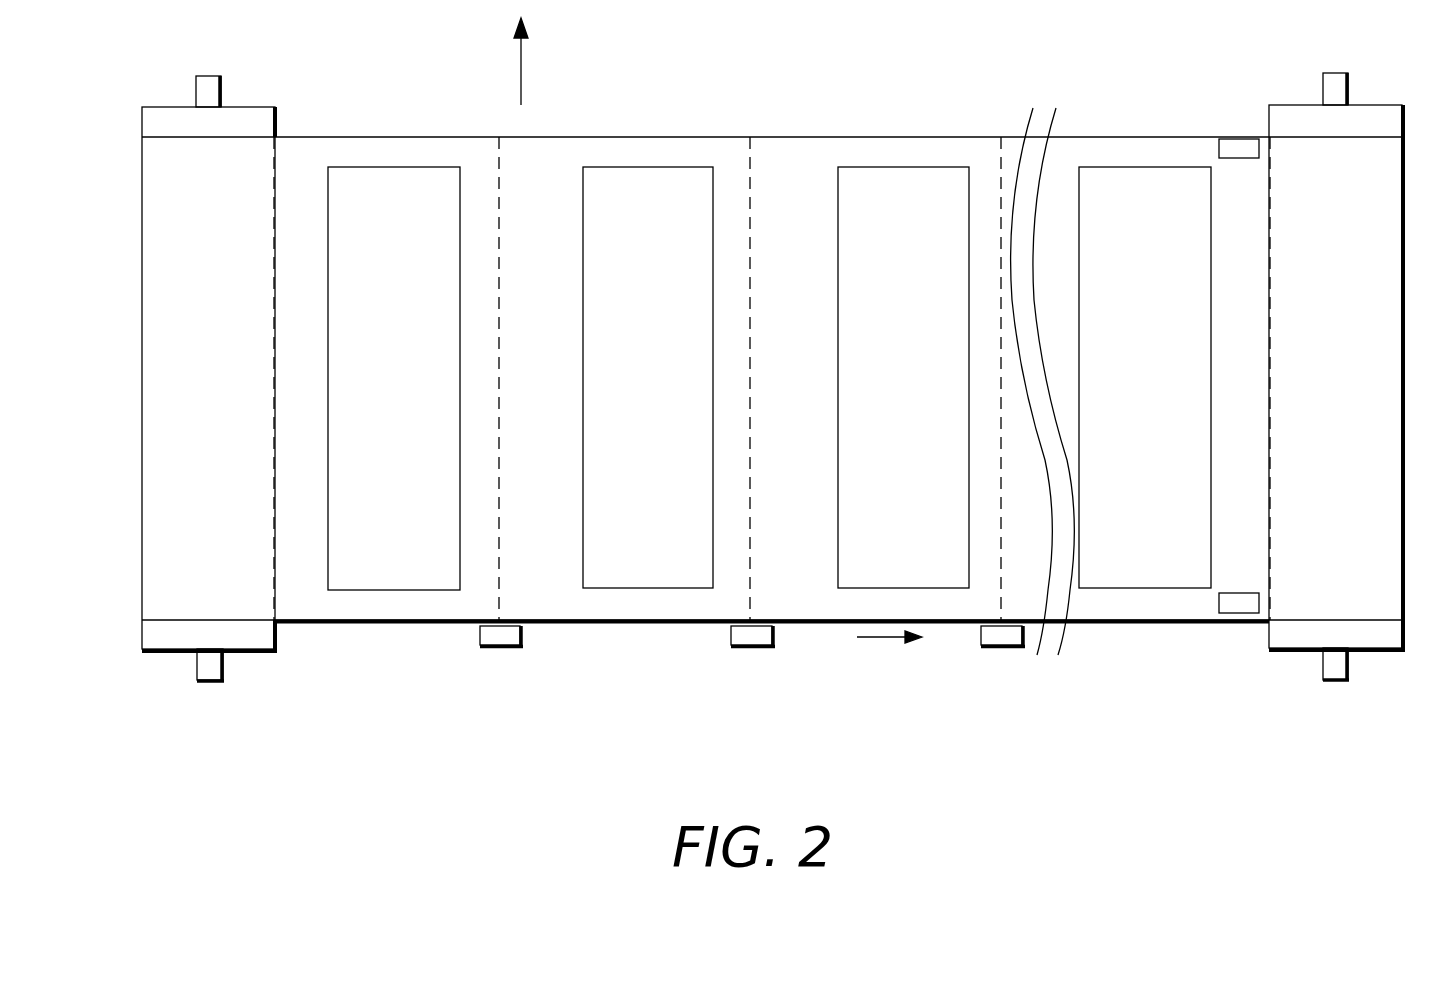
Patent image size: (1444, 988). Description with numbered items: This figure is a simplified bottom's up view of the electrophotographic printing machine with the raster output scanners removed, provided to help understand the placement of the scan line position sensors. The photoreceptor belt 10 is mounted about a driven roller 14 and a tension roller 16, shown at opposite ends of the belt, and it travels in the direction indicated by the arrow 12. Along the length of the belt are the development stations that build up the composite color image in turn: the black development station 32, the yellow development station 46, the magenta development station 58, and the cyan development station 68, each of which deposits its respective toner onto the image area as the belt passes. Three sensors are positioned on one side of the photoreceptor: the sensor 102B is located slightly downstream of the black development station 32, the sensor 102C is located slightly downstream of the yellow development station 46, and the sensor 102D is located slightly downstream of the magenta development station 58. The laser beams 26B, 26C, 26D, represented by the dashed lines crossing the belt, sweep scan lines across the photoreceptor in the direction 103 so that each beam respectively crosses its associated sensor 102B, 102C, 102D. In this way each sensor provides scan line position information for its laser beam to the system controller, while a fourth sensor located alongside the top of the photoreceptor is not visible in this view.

The photoreceptor belt 10 is at (522, 165).
The arrow 12 is at (868, 637).
The driven roller 14 is at (1365, 105).
The tension roller 16 is at (232, 107).
The laser beam 26B is at (499, 298).
The laser beam 26C is at (750, 298).
The laser beam 26D is at (1001, 298).
The black development station 32 is at (387, 167).
The yellow development station 46 is at (633, 167).
The magenta development station 58 is at (900, 167).
The cyan development station 68 is at (1100, 167).
The sensor 102B is at (497, 645).
The sensor 102C is at (743, 645).
The sensor 102D is at (993, 645).
The direction 103 is at (521, 62).